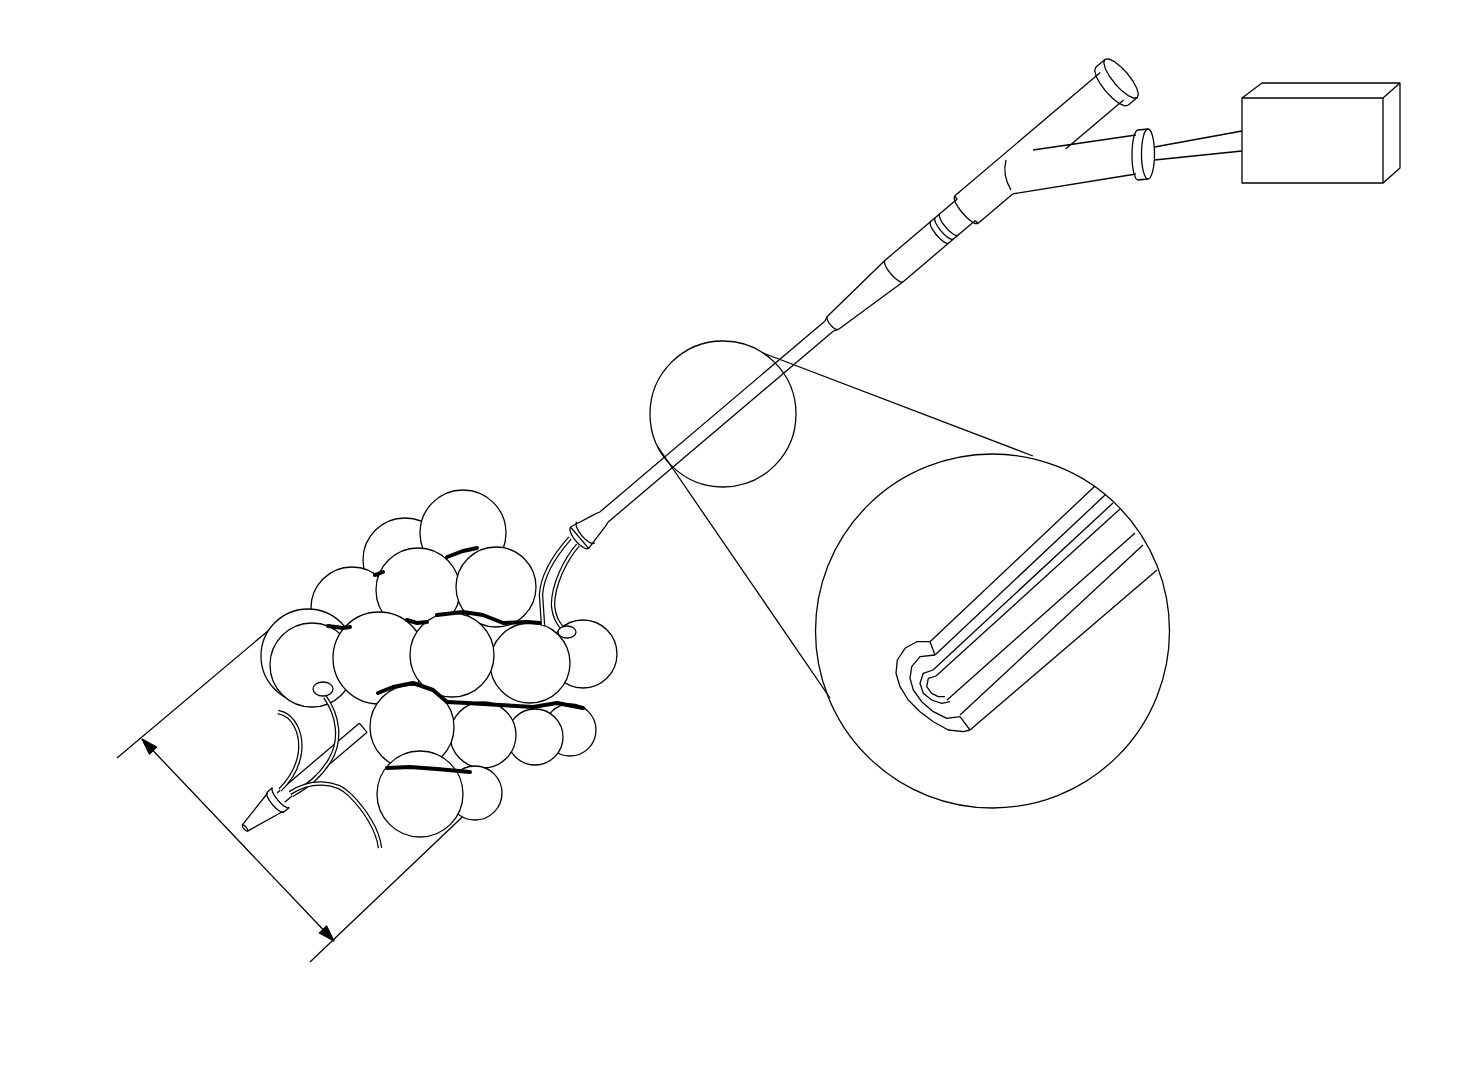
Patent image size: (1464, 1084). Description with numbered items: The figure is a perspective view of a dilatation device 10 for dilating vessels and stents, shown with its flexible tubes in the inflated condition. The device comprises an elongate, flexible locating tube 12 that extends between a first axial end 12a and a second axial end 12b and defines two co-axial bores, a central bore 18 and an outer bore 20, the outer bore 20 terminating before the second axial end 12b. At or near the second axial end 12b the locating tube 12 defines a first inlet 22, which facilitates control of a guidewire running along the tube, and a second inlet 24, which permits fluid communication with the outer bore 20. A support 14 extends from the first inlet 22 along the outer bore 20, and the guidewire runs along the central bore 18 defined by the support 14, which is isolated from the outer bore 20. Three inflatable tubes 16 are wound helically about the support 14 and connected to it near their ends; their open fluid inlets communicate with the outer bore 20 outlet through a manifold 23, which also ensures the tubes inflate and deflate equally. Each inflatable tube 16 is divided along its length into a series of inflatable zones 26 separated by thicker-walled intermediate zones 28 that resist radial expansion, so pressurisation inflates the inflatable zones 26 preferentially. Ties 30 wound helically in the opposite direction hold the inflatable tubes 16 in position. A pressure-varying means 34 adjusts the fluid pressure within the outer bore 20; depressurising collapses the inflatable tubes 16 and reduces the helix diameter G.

The dilatation device 10 is at (616, 250).
The locating tube 12 is at (878, 425).
The first axial end 12a is at (605, 523).
The second axial end 12b is at (1113, 90).
The support 14 is at (347, 743).
The inflatable tubes 16 is at (290, 747).
The central bore 18 is at (960, 670).
The outer bore 20 is at (917, 687).
The first inlet 22 is at (1125, 72).
The manifold 23 is at (597, 538).
The second inlet 24 is at (1162, 162).
The inflatable zones 26 is at (468, 626).
The intermediate zone 28 is at (495, 660).
The ties 30 is at (340, 620).
The means for varying fluid pressure 34 is at (1392, 153).
The helix diameter G is at (297, 793).